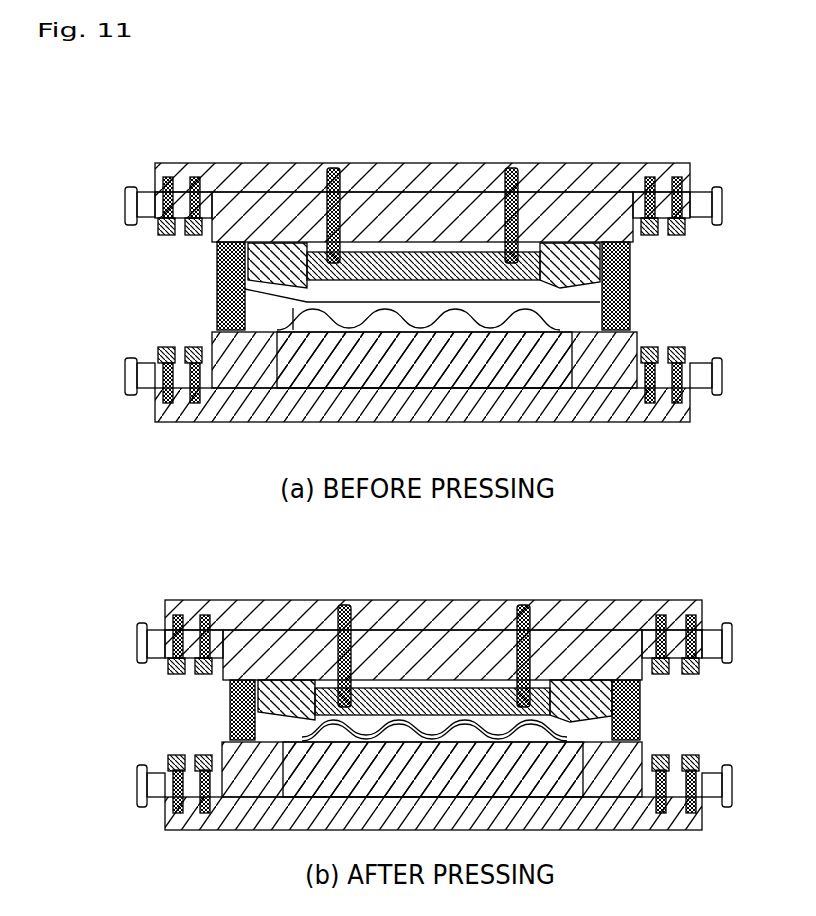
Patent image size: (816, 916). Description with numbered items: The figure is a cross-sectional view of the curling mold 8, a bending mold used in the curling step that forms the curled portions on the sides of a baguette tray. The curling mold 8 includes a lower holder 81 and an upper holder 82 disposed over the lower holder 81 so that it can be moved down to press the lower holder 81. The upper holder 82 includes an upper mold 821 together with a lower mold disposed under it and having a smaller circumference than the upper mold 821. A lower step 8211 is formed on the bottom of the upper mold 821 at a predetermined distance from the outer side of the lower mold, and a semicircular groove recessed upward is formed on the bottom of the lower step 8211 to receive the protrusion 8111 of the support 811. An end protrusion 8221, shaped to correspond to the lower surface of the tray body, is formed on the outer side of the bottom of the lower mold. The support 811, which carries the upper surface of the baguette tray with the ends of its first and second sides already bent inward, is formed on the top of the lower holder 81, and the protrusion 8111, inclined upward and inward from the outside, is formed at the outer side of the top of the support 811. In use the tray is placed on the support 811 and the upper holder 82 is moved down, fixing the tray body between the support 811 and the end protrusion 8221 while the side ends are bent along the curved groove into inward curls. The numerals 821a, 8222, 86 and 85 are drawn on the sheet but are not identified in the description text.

The curling mold 8 is at (426, 674).
The lower holder 81 is at (480, 408).
The support 811 is at (630, 325).
The protrusion 8111 is at (277, 322).
The upper holder 82 is at (305, 143).
The upper mold 821 is at (628, 245).
The upper forming insert 821a is at (262, 222).
The lower step 8211 is at (217, 274).
The end protrusion 8221 is at (217, 302).
The upper forming surface 8222 is at (630, 300).
The heating plate 86 is at (392, 266).
The spacer block 85 is at (230, 715).